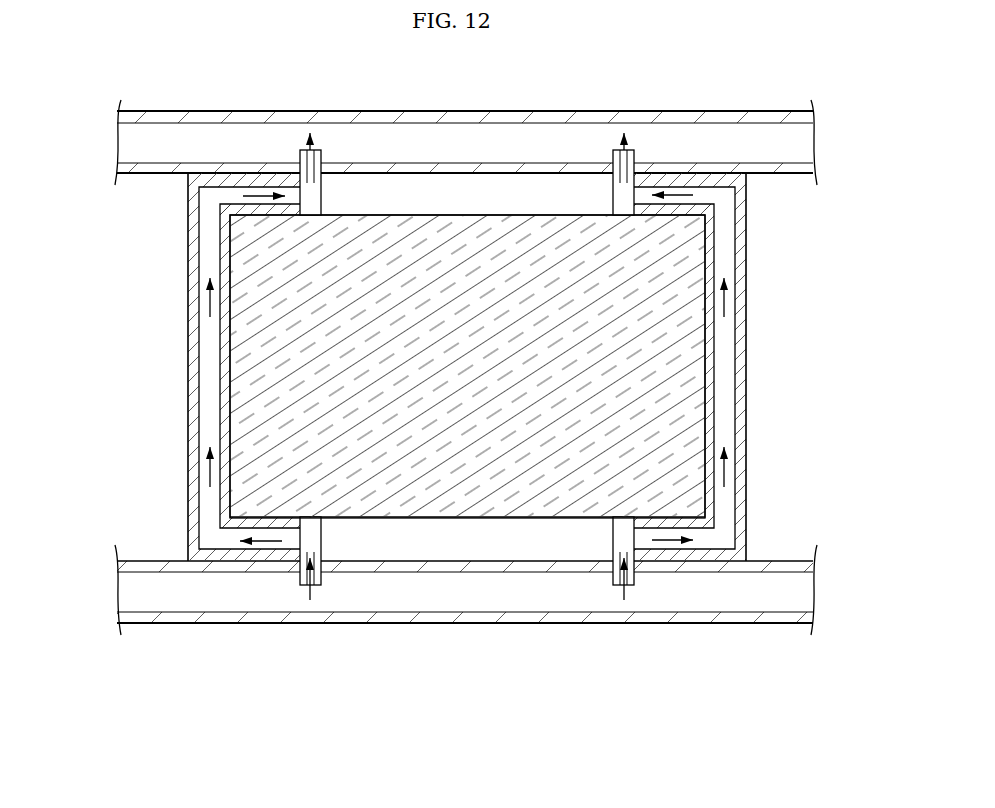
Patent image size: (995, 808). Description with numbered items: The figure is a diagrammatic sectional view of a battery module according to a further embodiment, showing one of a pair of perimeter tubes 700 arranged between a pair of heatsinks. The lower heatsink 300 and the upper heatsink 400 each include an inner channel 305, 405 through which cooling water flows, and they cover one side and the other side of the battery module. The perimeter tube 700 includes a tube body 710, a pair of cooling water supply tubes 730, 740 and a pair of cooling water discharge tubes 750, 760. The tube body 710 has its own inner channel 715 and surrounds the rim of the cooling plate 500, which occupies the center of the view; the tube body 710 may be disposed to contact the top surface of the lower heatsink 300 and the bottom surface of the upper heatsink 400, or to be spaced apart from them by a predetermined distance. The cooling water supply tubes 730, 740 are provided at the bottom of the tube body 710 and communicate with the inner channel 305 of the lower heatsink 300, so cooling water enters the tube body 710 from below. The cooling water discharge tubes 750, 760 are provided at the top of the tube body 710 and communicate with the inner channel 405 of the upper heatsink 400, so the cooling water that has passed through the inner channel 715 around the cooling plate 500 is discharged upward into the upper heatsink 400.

The lower heatsink 300 is at (452, 623).
The inner channel 305 is at (532, 590).
The upper heatsink 400 is at (452, 111).
The inner channel 405 is at (532, 145).
The cooling plate 500 is at (667, 257).
The perimeter tube 700 is at (440, 369).
The tube body 710 is at (747, 301).
The inner channel 715 is at (726, 357).
The cooling water supply tube 730 is at (634, 578).
The cooling water supply tube 740 is at (300, 578).
The cooling water discharge tube 750 is at (300, 158).
The cooling water discharge tube 760 is at (634, 158).